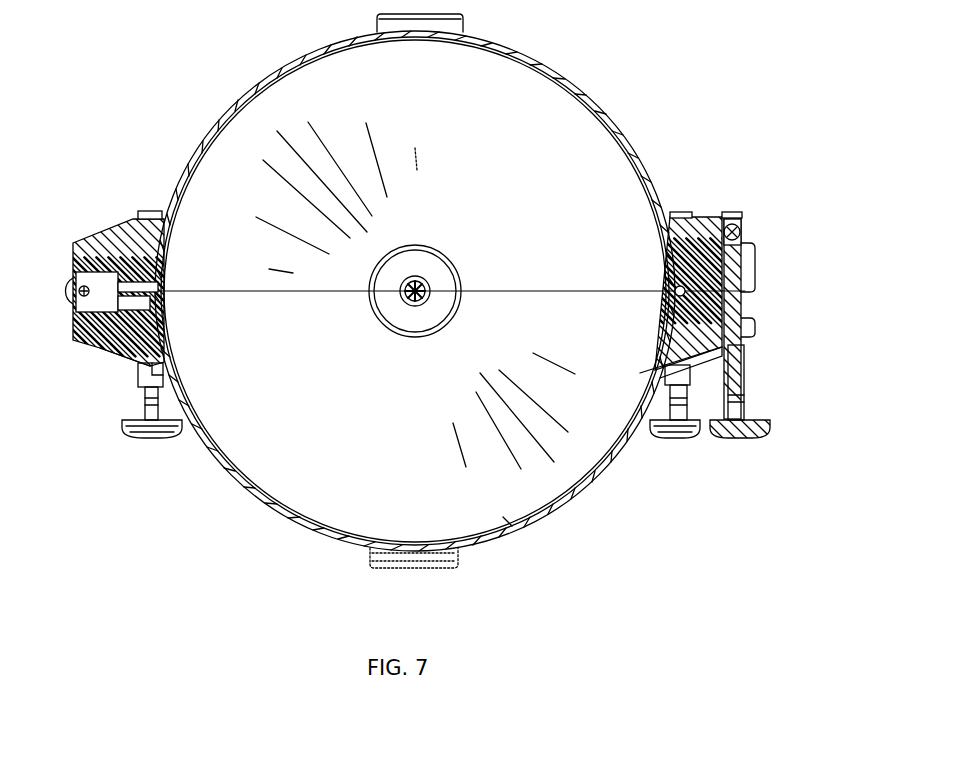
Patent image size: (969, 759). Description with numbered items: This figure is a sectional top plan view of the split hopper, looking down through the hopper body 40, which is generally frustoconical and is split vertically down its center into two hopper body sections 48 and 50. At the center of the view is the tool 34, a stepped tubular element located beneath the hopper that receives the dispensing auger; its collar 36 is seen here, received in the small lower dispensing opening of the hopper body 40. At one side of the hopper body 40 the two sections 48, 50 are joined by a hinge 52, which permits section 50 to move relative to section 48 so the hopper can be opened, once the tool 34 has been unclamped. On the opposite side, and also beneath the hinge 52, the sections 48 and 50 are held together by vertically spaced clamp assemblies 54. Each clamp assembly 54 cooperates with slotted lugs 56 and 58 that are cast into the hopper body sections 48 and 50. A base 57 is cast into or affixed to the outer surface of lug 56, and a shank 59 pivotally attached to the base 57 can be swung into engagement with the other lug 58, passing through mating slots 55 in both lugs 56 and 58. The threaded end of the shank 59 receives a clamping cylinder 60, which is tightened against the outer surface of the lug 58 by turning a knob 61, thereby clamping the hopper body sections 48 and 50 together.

The hopper body 40 is at (568, 38).
The hopper body section 48 is at (555, 97).
The hopper body section 50 is at (510, 521).
The collar 36 is at (440, 256).
The tool 34 is at (428, 300).
The hinge 52 is at (78, 284).
The clamp assembly 54 is at (118, 373).
The slot 55 is at (752, 294).
The lug 56 is at (135, 245).
The base 57 is at (152, 211).
The lug 58 is at (118, 352).
The shank 59 is at (737, 268).
The clamping cylinder 60 is at (150, 382).
The knob 61 is at (156, 438).